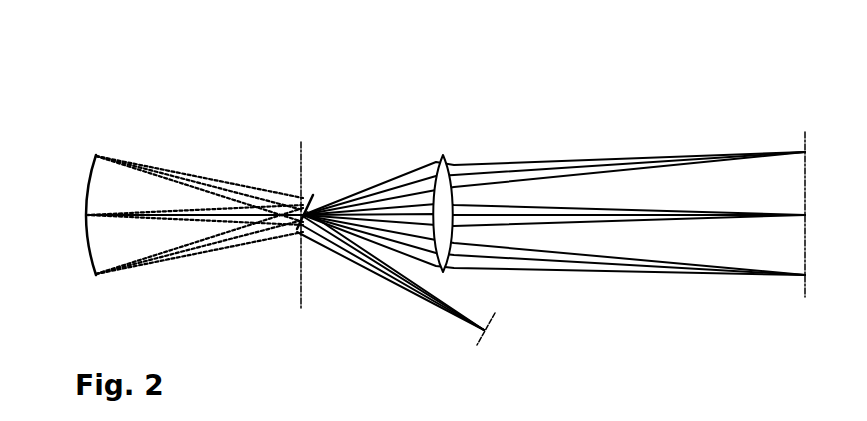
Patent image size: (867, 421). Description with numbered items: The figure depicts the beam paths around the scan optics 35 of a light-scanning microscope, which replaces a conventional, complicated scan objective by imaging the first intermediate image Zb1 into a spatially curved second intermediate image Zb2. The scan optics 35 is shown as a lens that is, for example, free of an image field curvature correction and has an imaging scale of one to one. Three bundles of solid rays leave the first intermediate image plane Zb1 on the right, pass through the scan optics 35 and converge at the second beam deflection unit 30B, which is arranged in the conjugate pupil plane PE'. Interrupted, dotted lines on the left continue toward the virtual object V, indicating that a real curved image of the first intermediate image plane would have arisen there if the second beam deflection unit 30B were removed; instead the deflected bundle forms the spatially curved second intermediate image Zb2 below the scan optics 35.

The virtual object V is at (92, 155).
The conjugate pupil plane PE' is at (288, 205).
The second beam deflection unit 30B is at (312, 192).
The scan optics 35 is at (442, 155).
The first intermediate image plane Zb1 is at (805, 133).
The second intermediate image plane Zb2 is at (481, 334).